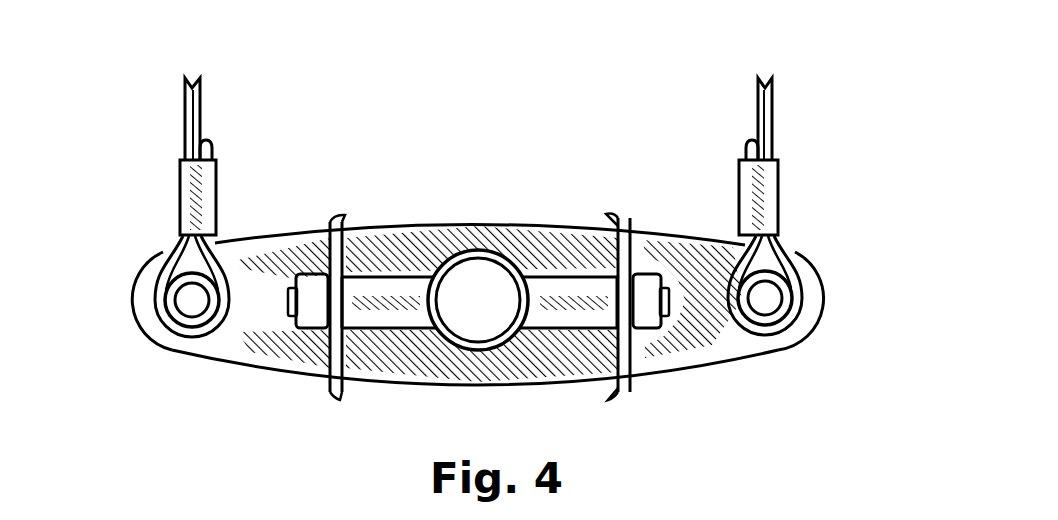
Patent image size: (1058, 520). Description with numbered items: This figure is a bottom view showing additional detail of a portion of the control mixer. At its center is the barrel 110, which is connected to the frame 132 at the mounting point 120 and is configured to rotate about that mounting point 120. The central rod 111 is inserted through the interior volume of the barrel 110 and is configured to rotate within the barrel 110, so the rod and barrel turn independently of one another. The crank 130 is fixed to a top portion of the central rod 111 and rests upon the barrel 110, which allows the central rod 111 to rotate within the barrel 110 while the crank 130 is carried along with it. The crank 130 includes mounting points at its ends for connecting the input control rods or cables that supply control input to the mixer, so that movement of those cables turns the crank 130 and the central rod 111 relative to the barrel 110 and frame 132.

The barrel 110 is at (478, 352).
The central rod 111 is at (473, 275).
The mounting point 120 is at (649, 330).
The crank 130 is at (647, 230).
The frame 132 is at (340, 220).